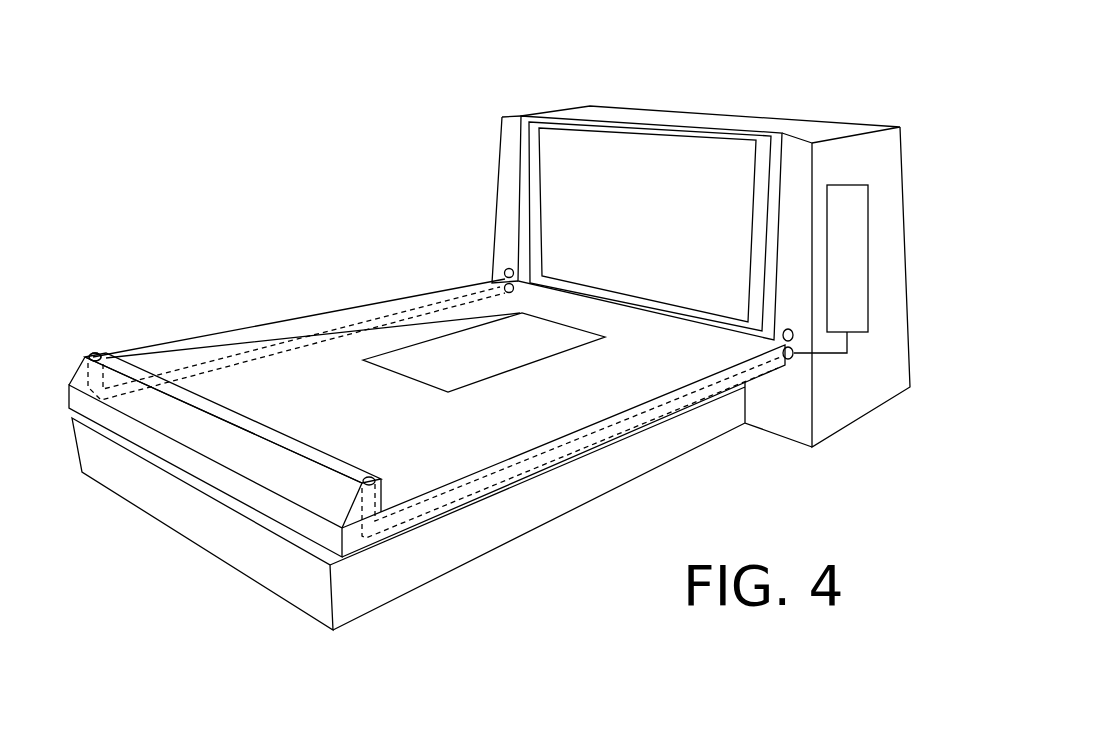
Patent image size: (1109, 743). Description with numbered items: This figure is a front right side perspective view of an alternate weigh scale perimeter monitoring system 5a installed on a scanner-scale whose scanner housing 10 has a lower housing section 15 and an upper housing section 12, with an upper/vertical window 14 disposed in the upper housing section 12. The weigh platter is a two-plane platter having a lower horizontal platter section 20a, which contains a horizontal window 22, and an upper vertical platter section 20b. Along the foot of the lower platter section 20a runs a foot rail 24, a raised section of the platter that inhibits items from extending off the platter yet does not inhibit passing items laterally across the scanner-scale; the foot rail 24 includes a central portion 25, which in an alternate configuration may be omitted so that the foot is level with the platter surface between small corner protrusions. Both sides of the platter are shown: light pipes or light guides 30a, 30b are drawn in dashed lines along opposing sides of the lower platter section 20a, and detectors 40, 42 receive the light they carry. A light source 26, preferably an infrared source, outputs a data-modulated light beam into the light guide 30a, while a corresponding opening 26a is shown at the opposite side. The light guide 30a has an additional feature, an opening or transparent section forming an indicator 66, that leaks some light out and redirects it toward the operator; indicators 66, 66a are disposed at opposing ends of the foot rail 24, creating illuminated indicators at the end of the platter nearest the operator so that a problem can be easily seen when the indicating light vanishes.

The weigh scale perimeter monitoring system 5a is at (446, 133).
The scanner housing 10 is at (672, 238).
The upper housing section 12 is at (512, 116).
The upper/vertical window 14 is at (662, 148).
The lower housing section 15 is at (215, 530).
The lower platter section 20a is at (168, 452).
The upper platter section 20b is at (613, 115).
The horizontal window 22 is at (538, 333).
The foot rail 24 is at (86, 354).
The central portion 25 is at (270, 435).
The light source 26 is at (790, 359).
The opening 26a is at (503, 286).
The light guide 30a is at (625, 432).
The light guide 30b is at (208, 366).
The detector 40 is at (786, 329).
The detector 42 is at (506, 268).
The indicator 66 is at (370, 478).
The indicator 66a is at (98, 353).